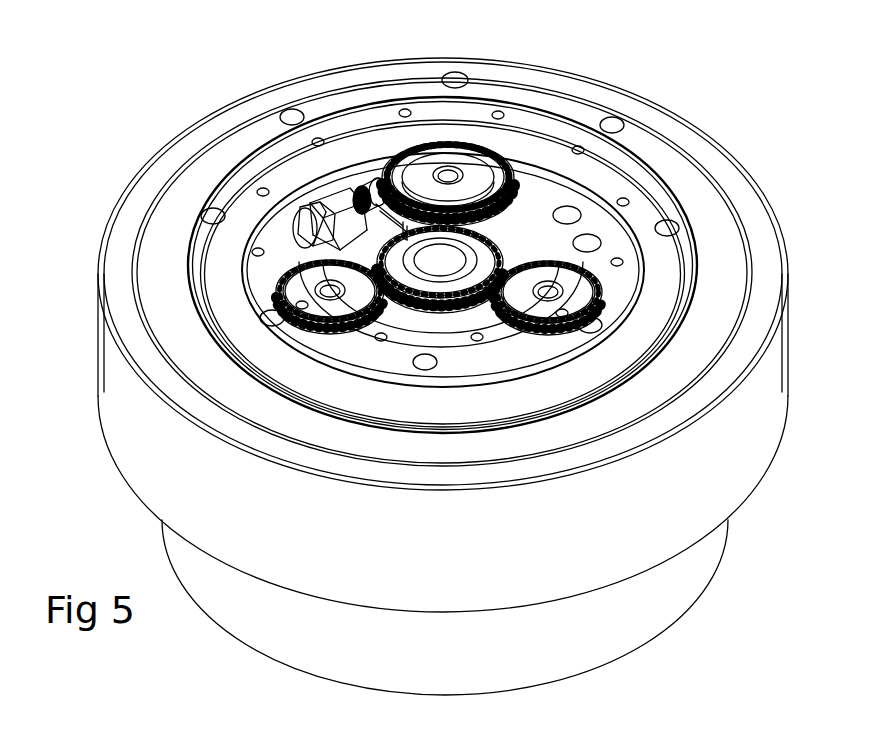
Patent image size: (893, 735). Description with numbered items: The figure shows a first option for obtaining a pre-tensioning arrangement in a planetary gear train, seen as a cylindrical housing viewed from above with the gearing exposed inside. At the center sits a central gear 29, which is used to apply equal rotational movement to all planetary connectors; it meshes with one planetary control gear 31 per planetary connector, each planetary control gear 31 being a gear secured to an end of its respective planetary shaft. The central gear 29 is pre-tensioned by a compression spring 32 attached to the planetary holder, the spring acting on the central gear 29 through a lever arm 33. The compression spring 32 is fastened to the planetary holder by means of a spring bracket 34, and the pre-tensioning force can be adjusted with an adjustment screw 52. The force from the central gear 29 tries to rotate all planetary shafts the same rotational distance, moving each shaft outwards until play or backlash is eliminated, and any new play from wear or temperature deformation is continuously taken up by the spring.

The central gear 29 is at (493, 258).
The planetary control gear 31 is at (507, 165).
The compression spring 32 is at (352, 197).
The lever arm 33 is at (365, 188).
The spring bracket 34 is at (352, 215).
The adjustment screw 52 is at (313, 237).